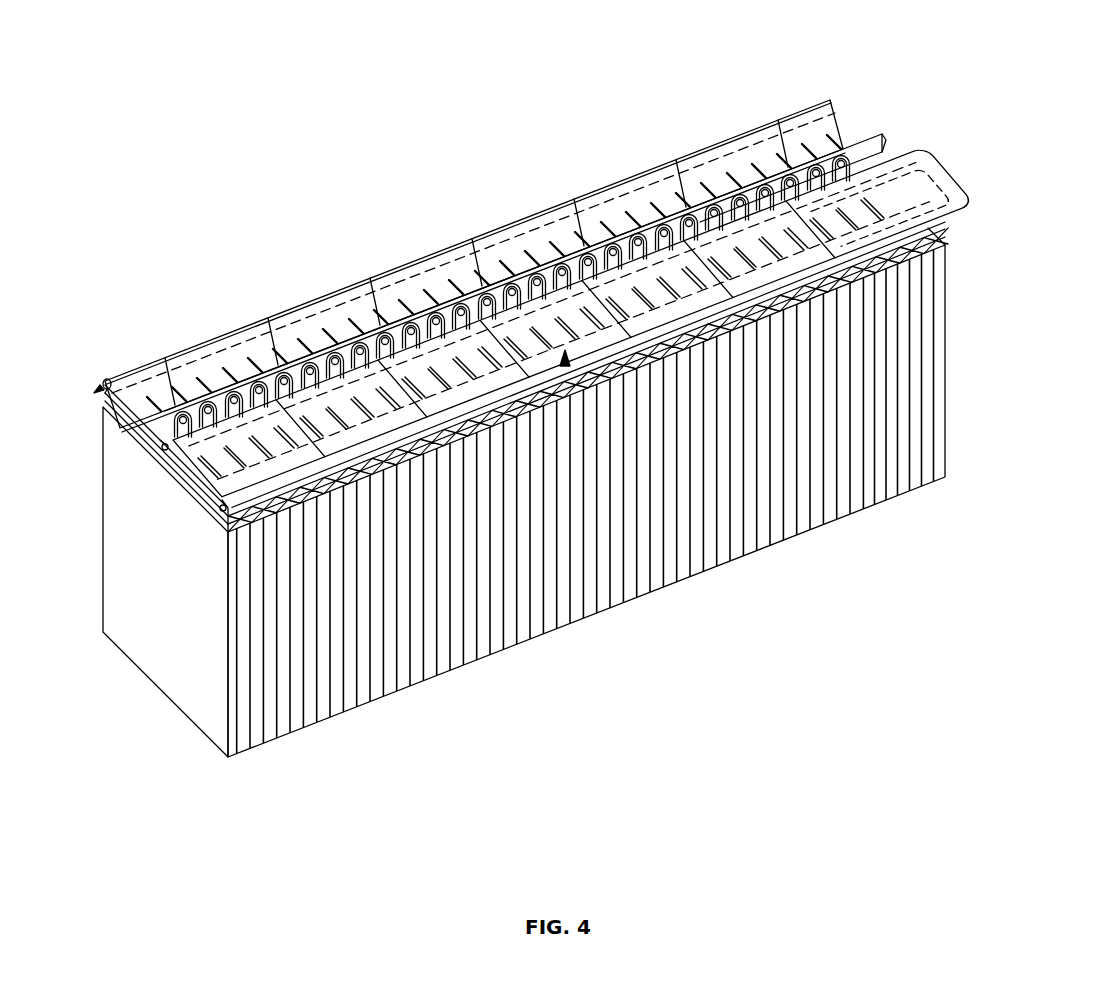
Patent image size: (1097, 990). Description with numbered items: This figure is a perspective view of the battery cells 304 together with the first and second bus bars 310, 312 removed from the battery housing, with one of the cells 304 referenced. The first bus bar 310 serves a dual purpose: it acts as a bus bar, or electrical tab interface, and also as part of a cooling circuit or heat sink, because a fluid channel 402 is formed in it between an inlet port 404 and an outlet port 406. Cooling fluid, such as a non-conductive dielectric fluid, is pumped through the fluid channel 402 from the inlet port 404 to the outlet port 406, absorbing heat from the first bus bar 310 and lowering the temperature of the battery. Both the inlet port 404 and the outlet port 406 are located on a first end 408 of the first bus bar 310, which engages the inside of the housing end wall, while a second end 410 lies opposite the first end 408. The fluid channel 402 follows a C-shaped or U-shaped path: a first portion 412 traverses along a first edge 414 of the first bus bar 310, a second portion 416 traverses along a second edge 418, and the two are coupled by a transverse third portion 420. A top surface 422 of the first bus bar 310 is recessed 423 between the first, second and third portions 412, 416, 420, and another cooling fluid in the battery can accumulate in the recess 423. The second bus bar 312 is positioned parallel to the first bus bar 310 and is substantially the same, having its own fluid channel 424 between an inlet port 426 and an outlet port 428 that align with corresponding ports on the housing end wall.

The battery cells 304 is at (252, 615).
The first bus bar 310 is at (250, 470).
The second bus bar 312 is at (476, 262).
The fluid channel 402 is at (573, 268).
The inlet port 404 is at (172, 460).
The outlet port 406 is at (218, 512).
The first end 408 is at (193, 490).
The second end 410 is at (886, 166).
The first portion 412 is at (675, 330).
The first edge 414 is at (178, 362).
The second portion 416 is at (465, 410).
The second edge 418 is at (390, 450).
The third portion 420 is at (881, 207).
The top surface 422 is at (555, 329).
The recess 423 is at (564, 366).
The fluid channel 424 is at (474, 266).
The inlet port 426 is at (162, 442).
The outlet port 428 is at (100, 394).